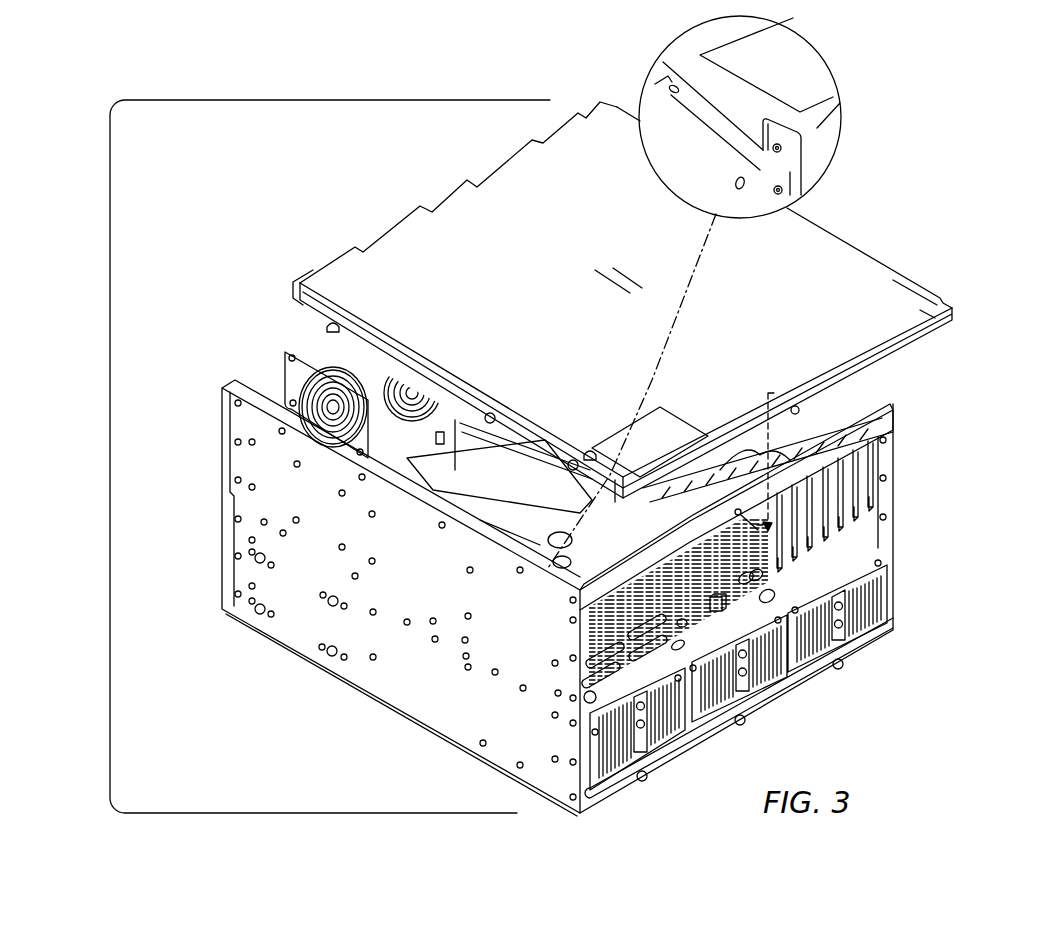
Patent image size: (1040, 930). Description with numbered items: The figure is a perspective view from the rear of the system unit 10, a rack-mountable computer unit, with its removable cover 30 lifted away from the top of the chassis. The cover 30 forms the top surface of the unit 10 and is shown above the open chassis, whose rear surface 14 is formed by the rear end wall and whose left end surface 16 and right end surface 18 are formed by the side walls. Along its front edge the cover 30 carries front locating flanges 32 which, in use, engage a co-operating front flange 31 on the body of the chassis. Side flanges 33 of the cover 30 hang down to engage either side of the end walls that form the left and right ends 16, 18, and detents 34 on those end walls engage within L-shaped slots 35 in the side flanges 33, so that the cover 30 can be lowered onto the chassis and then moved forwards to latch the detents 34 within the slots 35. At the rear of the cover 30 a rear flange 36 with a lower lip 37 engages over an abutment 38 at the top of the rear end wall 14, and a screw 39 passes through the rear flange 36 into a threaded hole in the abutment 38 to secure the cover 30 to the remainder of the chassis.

The system unit 10 is at (110, 440).
The rear surface 14 is at (832, 713).
The left end surface 16 is at (915, 539).
The right end surface 18 is at (298, 689).
The cover 30 is at (541, 264).
The front flange 31 is at (267, 388).
The front locating flanges 32 is at (392, 227).
The side flanges 33 is at (300, 307).
The detents 34 is at (660, 87).
The L-shaped slots 35 is at (667, 82).
The rear flange 36 is at (818, 145).
The lower lip 37 is at (797, 170).
The abutment 38 is at (800, 152).
The screw 39 is at (796, 405).